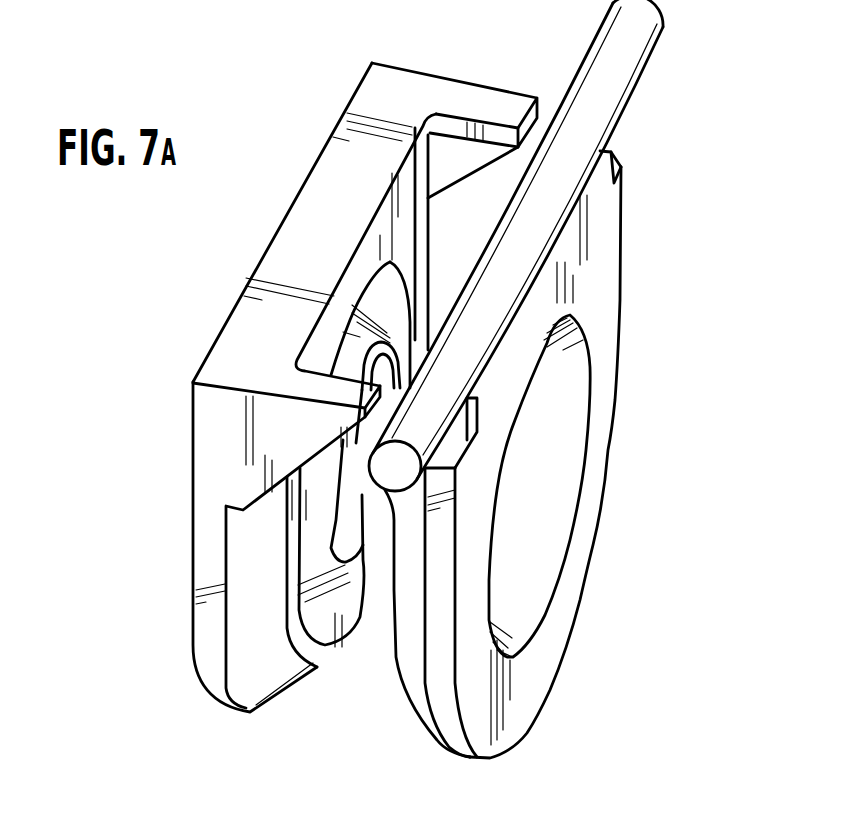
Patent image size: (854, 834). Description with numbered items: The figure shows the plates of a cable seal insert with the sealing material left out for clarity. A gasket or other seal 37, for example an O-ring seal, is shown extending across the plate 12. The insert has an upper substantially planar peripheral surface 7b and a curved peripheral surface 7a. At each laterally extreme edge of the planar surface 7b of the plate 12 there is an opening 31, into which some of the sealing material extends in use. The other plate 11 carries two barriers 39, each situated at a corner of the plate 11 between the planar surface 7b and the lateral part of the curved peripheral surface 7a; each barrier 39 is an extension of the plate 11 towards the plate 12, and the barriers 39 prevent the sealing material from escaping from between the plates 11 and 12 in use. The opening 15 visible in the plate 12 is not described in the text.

The curved peripheral surface 7a is at (202, 580).
The upper substantially planar peripheral surface 7b is at (240, 342).
The plate 11 is at (205, 533).
The plate 12 is at (605, 348).
The opening 15 is at (537, 508).
The opening 31 is at (621, 168).
The seal 37 is at (622, 38).
The barrier 39 is at (510, 108).